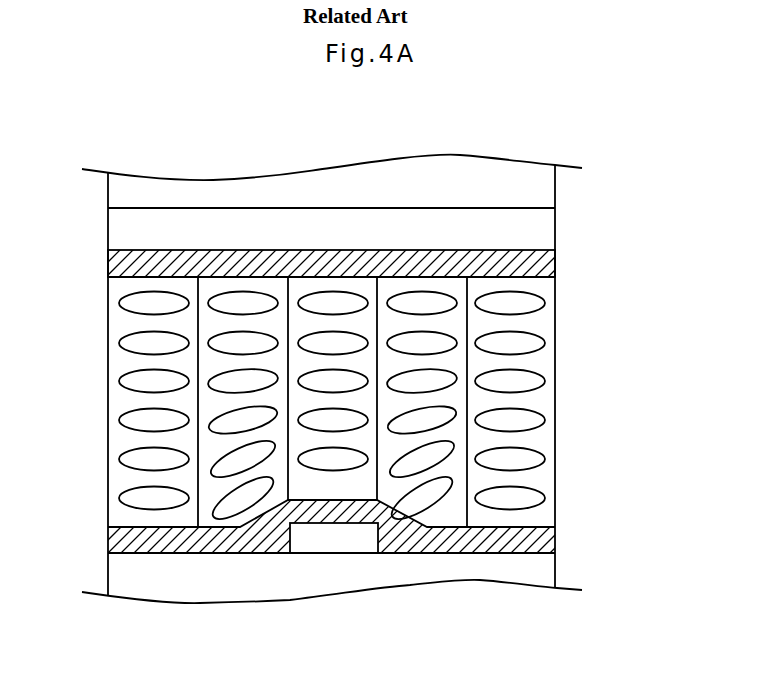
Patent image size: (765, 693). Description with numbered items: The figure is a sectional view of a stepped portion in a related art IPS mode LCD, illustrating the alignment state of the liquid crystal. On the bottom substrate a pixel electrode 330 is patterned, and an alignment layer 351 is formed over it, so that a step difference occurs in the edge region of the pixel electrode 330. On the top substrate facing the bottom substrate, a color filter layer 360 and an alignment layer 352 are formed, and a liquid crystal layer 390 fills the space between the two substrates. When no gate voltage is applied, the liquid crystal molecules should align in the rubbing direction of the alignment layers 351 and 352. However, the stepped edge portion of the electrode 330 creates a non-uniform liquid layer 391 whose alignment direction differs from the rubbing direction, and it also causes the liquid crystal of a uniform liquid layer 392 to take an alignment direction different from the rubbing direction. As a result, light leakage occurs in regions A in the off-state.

The color filter layer 360 is at (540, 224).
The alignment layer 352 is at (540, 260).
The alignment layer 351 is at (557, 532).
The pixel electrode 330 is at (330, 538).
The liquid crystal layer 390 is at (394, 409).
The uniform liquid layer 392 is at (565, 292).
The non-uniform liquid layer 391 is at (367, 463).
The region A is at (429, 322).